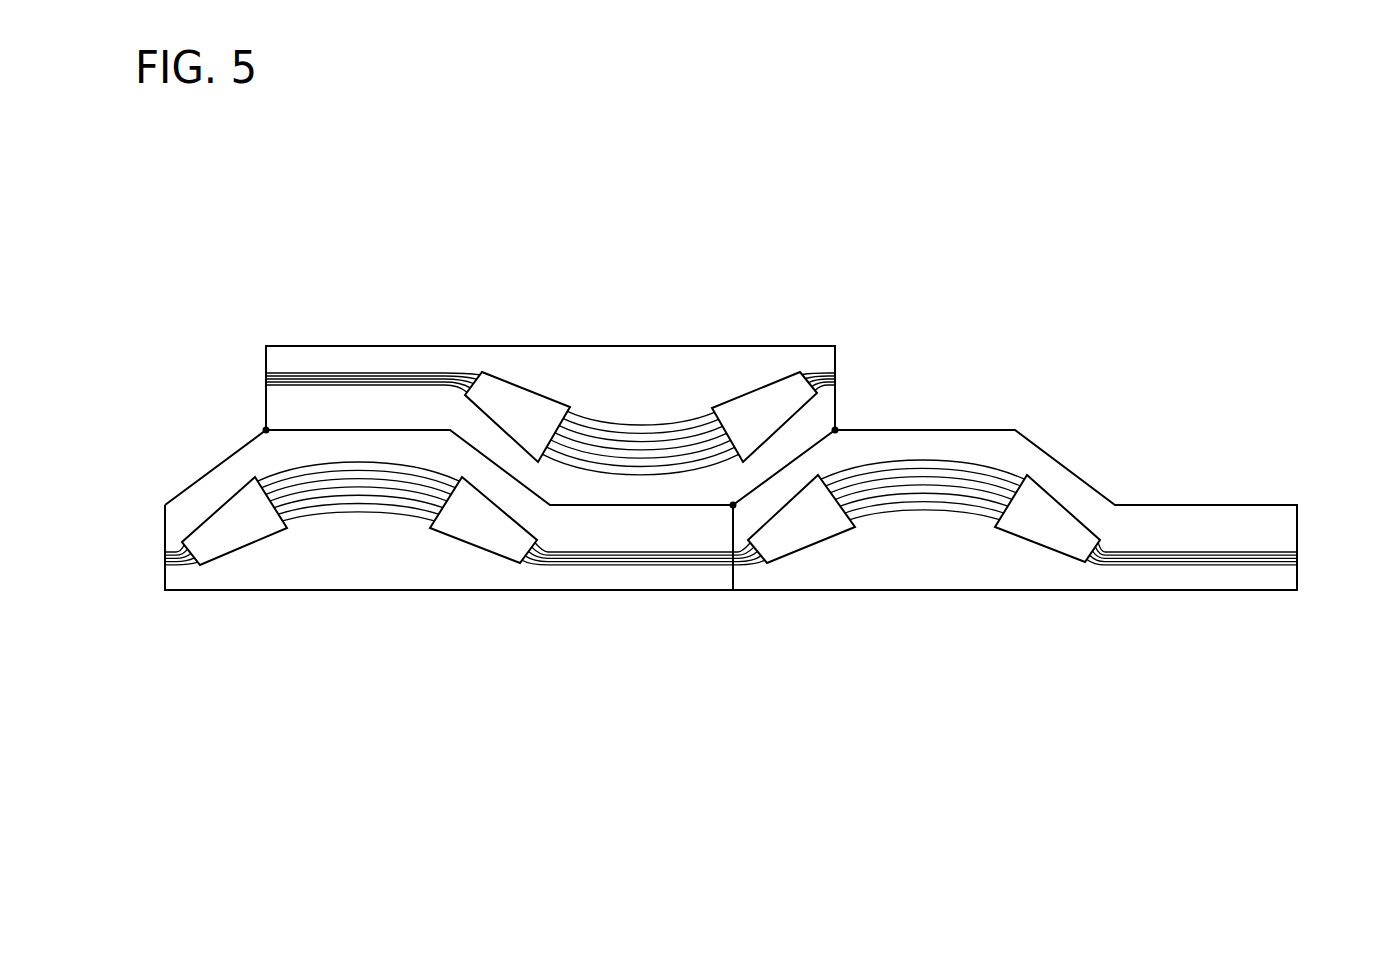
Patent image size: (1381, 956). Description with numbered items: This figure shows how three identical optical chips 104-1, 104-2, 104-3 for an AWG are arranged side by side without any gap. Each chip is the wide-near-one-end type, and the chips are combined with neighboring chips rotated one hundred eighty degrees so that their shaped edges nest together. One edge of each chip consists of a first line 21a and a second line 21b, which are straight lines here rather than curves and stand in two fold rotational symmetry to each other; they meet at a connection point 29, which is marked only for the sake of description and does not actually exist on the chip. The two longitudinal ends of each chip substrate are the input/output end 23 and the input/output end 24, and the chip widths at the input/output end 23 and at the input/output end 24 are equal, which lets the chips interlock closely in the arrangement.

The optical chip 104-1 is at (166, 502).
The optical chip 104-2 is at (1263, 503).
The optical chip 104-3 is at (462, 345).
The first line 21a is at (235, 452).
The second line 21b is at (495, 627).
The input/output end 23 is at (165, 572).
The input/output end 24 is at (267, 347).
The connection point 29 is at (266, 430).